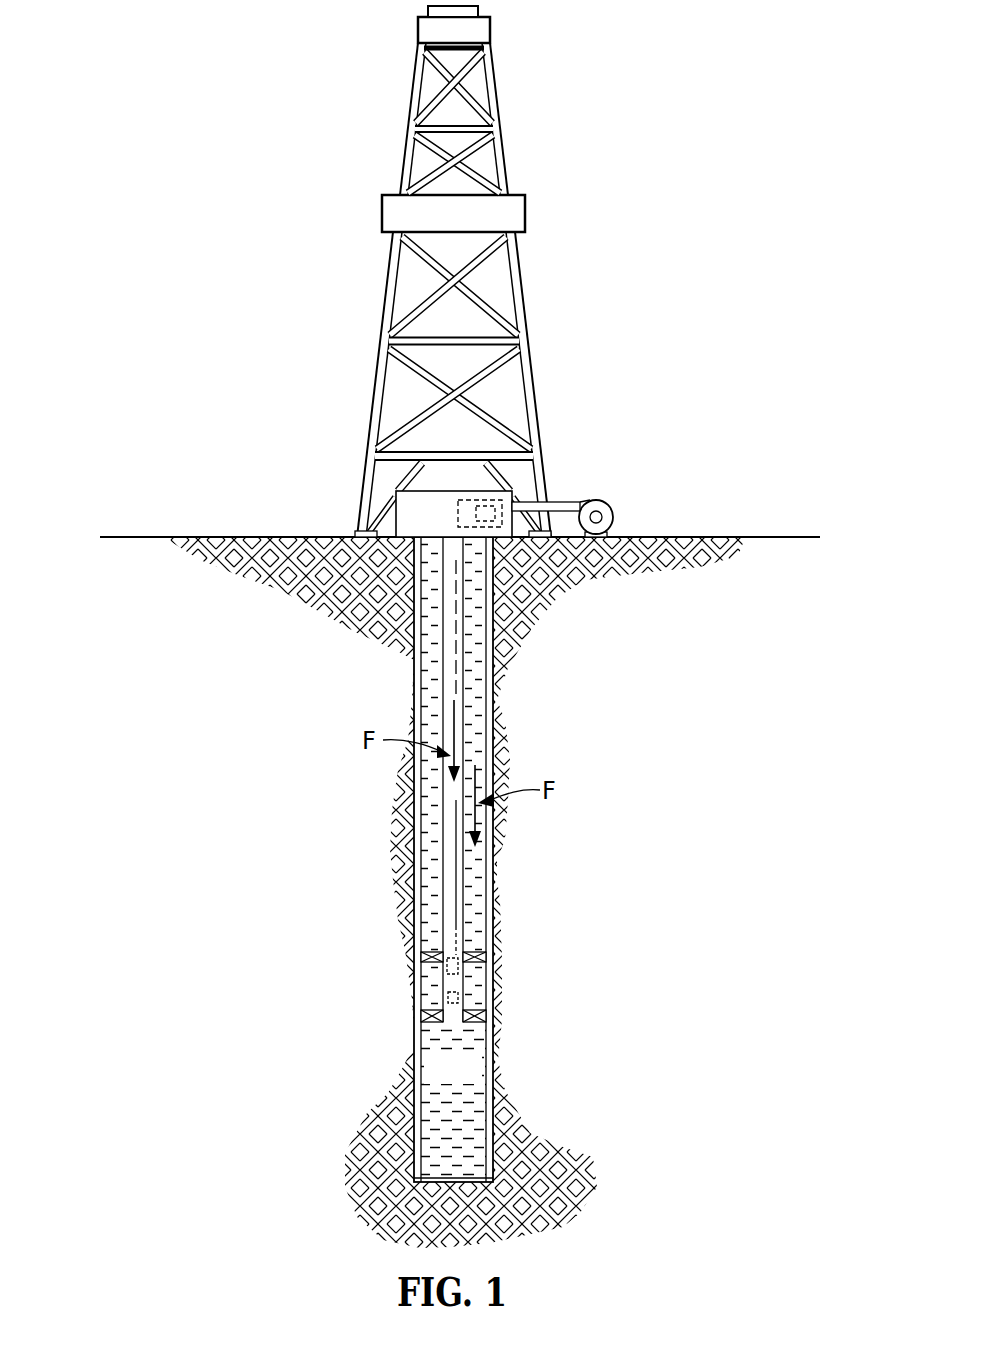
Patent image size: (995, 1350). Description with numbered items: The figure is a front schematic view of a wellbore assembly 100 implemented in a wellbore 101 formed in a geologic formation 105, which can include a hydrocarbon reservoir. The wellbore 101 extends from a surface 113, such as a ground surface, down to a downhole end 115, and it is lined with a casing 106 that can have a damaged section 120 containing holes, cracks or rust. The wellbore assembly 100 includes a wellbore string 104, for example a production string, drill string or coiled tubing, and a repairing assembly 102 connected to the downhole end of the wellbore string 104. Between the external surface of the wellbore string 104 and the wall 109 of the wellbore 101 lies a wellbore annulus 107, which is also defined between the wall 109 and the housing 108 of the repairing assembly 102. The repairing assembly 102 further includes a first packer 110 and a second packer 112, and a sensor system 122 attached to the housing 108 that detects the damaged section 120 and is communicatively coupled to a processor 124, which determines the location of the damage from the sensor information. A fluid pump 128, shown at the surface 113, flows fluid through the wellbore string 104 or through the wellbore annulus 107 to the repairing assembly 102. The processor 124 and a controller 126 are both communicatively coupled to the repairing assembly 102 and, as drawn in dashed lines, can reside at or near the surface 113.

The wellbore assembly 100 is at (304, 292).
The wellbore 101 is at (492, 862).
The repairing assembly 102 is at (398, 973).
The wellbore string 104 is at (436, 674).
The geologic formation 105 is at (440, 1222).
The casing 106 is at (488, 673).
The wellbore annulus 107 is at (478, 713).
The housing 108 is at (454, 1022).
The wall 109 is at (418, 694).
The first packer 110 is at (423, 954).
The second packer 112 is at (423, 1013).
The surface 113 is at (702, 536).
The downhole end 115 is at (481, 1170).
The damaged section 120 is at (490, 985).
The sensor system 122 is at (486, 1003).
The processor 124 is at (456, 955).
The controller 126 is at (458, 512).
The fluid pump 128 is at (594, 500).